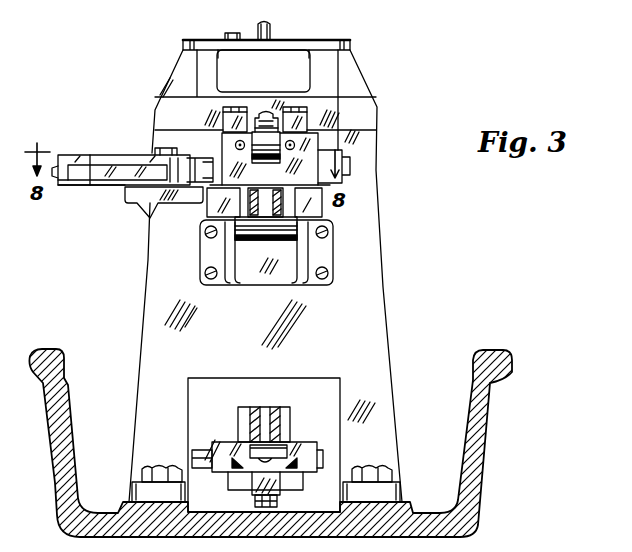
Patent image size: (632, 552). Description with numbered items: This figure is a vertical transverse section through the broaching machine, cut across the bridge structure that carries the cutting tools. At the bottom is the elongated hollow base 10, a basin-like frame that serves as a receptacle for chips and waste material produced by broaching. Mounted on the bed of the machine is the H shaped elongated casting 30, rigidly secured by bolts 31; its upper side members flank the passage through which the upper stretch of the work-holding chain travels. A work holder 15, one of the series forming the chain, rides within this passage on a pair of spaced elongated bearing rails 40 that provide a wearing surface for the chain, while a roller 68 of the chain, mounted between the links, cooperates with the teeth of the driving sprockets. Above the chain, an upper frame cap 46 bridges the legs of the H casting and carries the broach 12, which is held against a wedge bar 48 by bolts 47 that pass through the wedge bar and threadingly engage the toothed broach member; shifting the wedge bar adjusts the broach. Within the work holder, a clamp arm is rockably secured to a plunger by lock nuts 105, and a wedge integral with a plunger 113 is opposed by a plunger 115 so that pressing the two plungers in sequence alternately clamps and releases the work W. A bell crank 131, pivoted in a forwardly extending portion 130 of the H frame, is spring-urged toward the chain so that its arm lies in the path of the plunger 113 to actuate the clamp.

The hollow base 10 is at (53, 420).
The broach 12 is at (223, 118).
The work holder 15 is at (332, 183).
The H shaped elongated casting 30 is at (378, 300).
The bolt 31 is at (163, 473).
The bearing rail 40 is at (212, 210).
The upper frame cap 46 is at (323, 72).
The bolt 47 is at (232, 35).
The wedge bar 48 is at (247, 78).
The roller 68 is at (268, 210).
The lock nut 105 is at (280, 502).
The plunger 113 is at (202, 181).
The plunger 115 is at (318, 168).
The forwardly extending portion of the H frame 130 is at (116, 130).
The bell crank 131 is at (123, 188).
The workpiece gap W is at (300, 140).